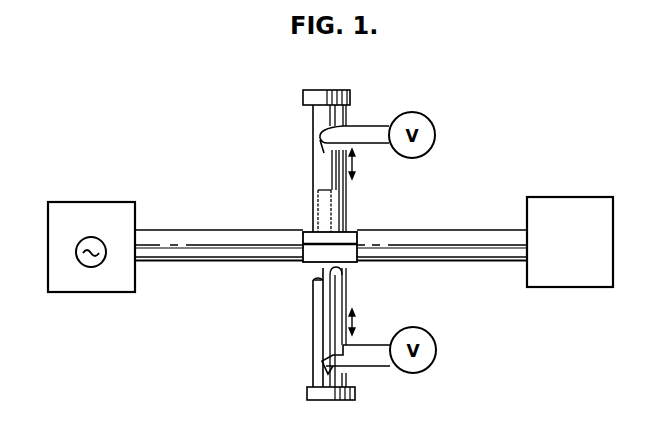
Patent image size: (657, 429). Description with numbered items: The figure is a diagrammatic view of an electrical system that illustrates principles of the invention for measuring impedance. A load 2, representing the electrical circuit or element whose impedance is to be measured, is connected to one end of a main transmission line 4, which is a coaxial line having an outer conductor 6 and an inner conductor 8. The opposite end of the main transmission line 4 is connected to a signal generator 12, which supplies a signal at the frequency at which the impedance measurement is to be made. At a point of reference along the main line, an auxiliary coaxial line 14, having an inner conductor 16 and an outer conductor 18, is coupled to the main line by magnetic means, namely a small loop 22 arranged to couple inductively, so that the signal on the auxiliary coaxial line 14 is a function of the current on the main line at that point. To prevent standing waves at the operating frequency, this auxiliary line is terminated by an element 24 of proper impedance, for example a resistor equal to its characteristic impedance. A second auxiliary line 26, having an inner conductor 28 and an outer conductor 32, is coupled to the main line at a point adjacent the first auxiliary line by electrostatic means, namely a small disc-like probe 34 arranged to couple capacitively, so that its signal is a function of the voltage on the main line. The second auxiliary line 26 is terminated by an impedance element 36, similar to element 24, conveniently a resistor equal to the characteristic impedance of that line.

The load 2 is at (561, 197).
The main transmission line 4 is at (464, 226).
The outer conductor 6 is at (477, 263).
The inner conductor 8 is at (345, 248).
The signal generator 12 is at (120, 201).
The auxiliary coaxial line 14 is at (306, 339).
The inner conductor 16 is at (316, 277).
The outer conductor 18 is at (312, 308).
The loop 22 is at (343, 273).
The terminating element 24 is at (308, 389).
The second auxiliary line 26 is at (306, 166).
The inner conductor 28 is at (334, 213).
The outer conductor 32 is at (347, 187).
The disc-like probe 34 is at (321, 226).
The impedance element 36 is at (350, 94).